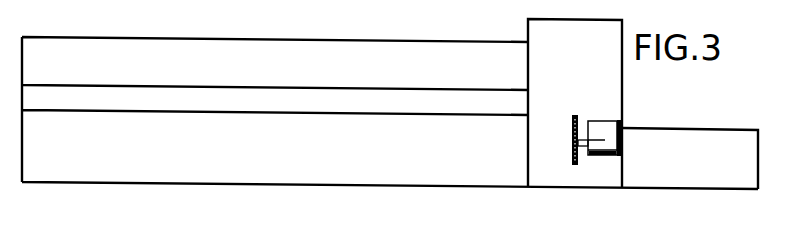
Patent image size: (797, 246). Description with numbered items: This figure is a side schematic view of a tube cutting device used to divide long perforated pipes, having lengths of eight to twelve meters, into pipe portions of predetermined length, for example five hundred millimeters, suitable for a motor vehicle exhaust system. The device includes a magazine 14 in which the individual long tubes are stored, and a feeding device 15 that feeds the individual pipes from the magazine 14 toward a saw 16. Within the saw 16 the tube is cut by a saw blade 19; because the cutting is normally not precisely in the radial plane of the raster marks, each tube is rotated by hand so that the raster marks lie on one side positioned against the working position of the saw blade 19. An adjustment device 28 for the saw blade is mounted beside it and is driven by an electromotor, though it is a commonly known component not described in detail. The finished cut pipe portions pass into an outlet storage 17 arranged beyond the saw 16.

The magazine 14 is at (278, 70).
The feeding device 15 is at (278, 170).
The saw 16 is at (585, 78).
The outlet storage 17 is at (698, 170).
The saw blade 19 is at (573, 160).
The adjustment device 28 is at (603, 155).